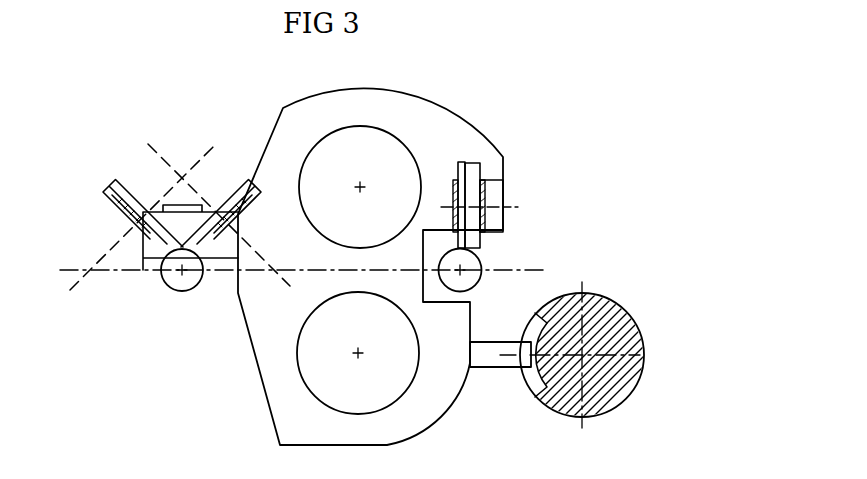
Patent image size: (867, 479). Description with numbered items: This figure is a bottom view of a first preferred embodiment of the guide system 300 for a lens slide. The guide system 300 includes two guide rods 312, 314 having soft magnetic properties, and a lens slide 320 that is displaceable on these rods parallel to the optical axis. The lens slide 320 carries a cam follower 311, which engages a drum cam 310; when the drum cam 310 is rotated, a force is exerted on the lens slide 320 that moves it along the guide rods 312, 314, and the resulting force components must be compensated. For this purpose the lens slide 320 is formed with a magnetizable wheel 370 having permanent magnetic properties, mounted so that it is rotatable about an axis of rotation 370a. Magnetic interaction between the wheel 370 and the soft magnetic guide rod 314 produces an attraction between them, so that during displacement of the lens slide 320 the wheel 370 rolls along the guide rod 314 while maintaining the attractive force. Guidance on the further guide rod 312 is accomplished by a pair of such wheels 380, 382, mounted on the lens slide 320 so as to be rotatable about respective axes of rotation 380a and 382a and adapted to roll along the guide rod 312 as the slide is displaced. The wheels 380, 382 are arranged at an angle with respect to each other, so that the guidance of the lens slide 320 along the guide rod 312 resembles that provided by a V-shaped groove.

The guide system 300 is at (655, 85).
The drum cam 310 is at (632, 327).
The cam follower 311 is at (490, 360).
The guide rod 312 is at (172, 305).
The guide rod 314 is at (477, 263).
The lens slide 320 is at (425, 108).
The magnetizable wheel 370 is at (472, 173).
The axis of rotation 370a is at (508, 205).
The wheel 380 is at (118, 188).
The axis of rotation 380a is at (93, 252).
The wheel 382 is at (238, 188).
The axis of rotation 382a is at (163, 160).